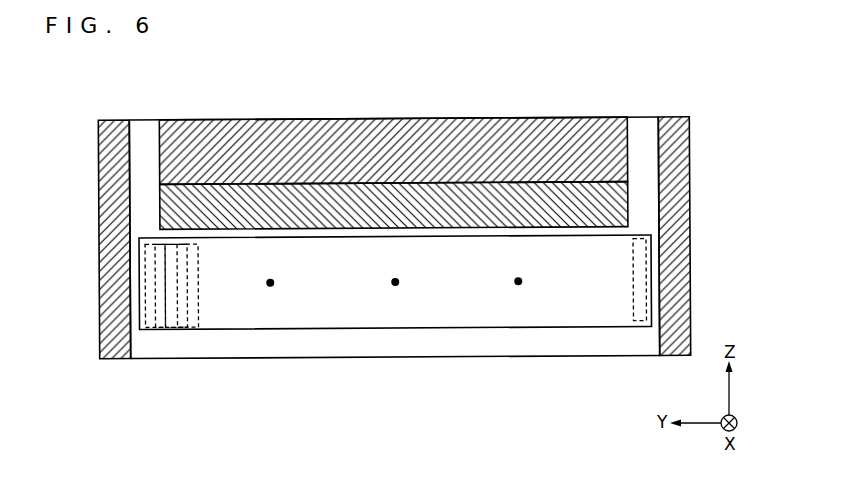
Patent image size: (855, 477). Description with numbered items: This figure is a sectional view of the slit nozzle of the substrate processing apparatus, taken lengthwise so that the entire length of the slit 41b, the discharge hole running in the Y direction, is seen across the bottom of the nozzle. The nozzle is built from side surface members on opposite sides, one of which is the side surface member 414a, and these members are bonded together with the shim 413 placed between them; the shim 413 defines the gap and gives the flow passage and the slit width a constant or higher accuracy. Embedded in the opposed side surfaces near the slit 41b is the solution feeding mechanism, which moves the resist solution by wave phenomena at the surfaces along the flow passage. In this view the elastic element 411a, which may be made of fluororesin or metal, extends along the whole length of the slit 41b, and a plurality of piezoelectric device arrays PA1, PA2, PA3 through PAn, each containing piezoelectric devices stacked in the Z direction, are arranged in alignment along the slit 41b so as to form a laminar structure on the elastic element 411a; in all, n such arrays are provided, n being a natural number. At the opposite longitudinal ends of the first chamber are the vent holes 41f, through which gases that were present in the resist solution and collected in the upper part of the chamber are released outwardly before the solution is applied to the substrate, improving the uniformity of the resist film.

The vent holes 41f is at (143, 125).
The shim 413 is at (422, 198).
The side surface member 414a is at (100, 253).
The slit 41b is at (396, 352).
The elastic element 411a is at (568, 315).
The piezoelectric device array PA1 is at (150, 332).
The piezoelectric device array PA2 is at (177, 332).
The piezoelectric device array PA3 is at (192, 332).
The piezoelectric device array PAn is at (638, 327).